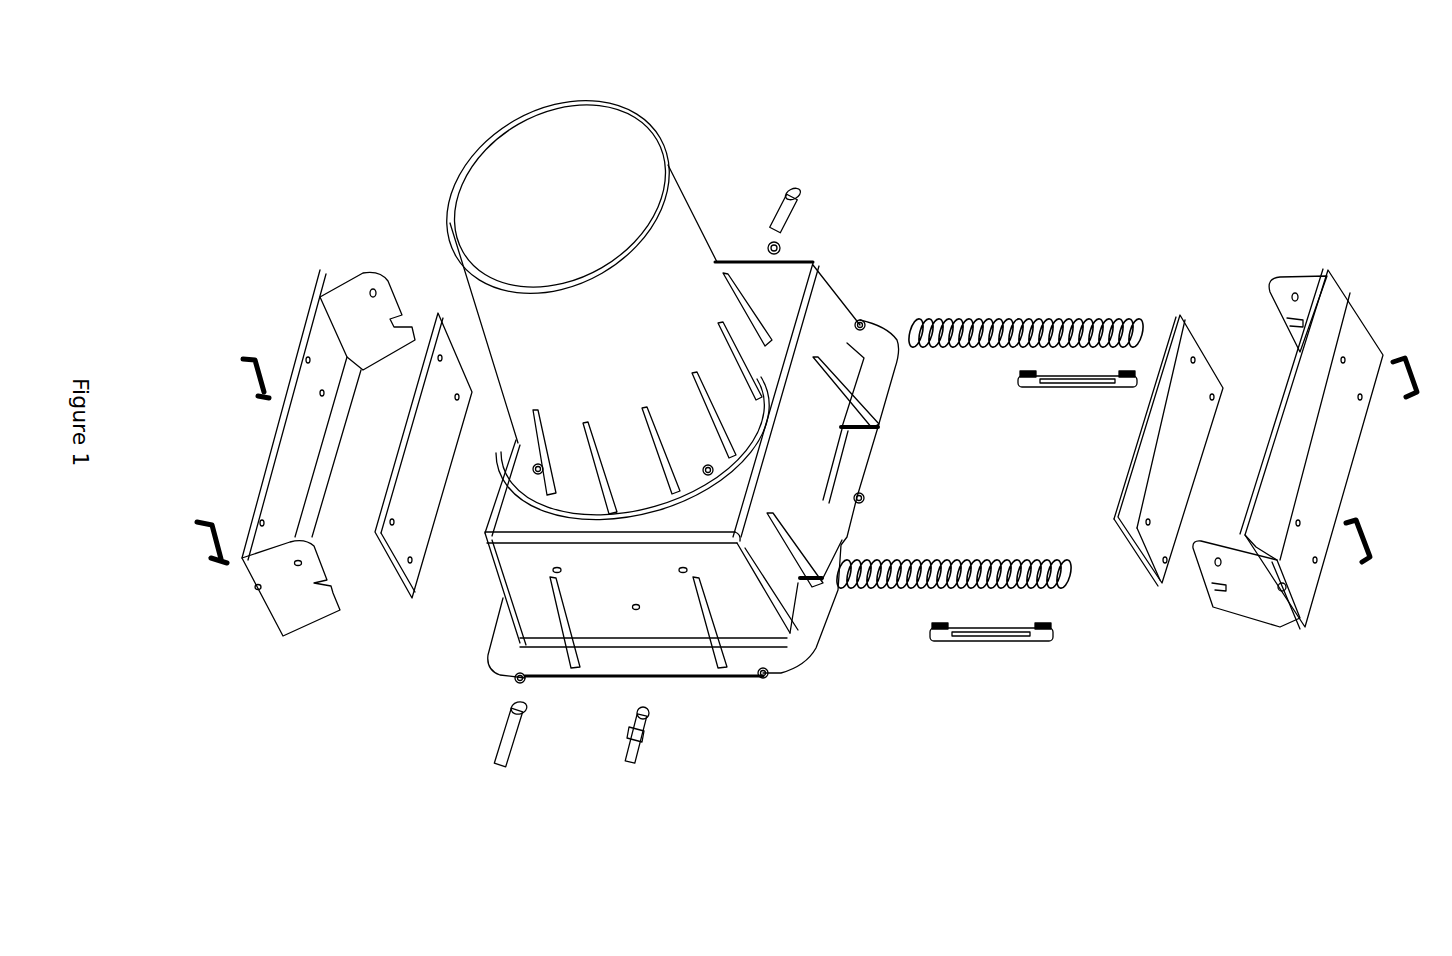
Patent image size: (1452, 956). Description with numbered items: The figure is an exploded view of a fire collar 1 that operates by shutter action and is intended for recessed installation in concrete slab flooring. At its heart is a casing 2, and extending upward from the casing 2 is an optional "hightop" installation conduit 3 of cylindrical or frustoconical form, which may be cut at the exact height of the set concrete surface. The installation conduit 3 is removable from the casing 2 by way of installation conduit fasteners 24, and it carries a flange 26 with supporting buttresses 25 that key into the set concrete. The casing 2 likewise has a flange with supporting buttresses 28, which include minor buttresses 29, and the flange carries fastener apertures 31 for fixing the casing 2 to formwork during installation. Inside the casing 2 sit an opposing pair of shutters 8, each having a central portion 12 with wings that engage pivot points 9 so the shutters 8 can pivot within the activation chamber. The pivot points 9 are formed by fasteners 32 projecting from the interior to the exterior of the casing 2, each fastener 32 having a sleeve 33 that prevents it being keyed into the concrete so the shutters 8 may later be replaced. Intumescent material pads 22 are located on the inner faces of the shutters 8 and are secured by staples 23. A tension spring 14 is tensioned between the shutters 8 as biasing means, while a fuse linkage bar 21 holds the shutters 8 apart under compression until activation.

The fire collar 1 is at (1068, 158).
The casing 2 is at (818, 262).
The installation conduit 3 is at (636, 122).
The shutters 8 is at (318, 273).
The pivot points 9 is at (370, 275).
The central portions 12 is at (291, 436).
The tension spring 14 is at (1010, 320).
The fuse linkage bar 21 is at (1078, 390).
The intumescent material pads 22 is at (416, 468).
The staples 23 is at (205, 535).
The installation conduit fasteners 24 is at (706, 463).
The supporting buttresses 25 is at (588, 440).
The flange 26 is at (641, 488).
The supporting buttresses 28 is at (806, 538).
The minor buttresses 29 is at (790, 635).
The fastener apertures 31 is at (772, 680).
The fasteners 32 is at (788, 243).
The sleeve 33 is at (790, 185).